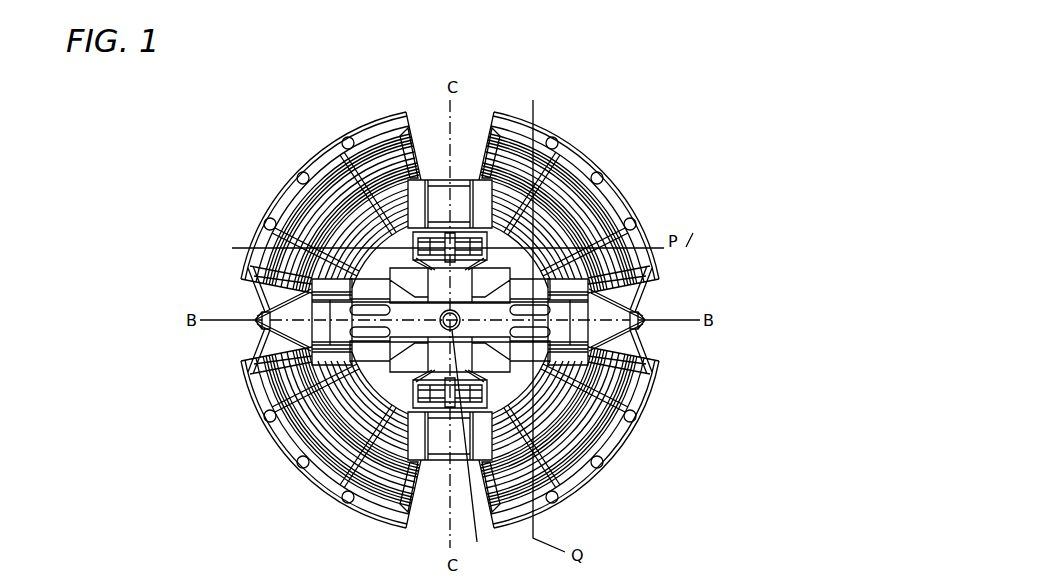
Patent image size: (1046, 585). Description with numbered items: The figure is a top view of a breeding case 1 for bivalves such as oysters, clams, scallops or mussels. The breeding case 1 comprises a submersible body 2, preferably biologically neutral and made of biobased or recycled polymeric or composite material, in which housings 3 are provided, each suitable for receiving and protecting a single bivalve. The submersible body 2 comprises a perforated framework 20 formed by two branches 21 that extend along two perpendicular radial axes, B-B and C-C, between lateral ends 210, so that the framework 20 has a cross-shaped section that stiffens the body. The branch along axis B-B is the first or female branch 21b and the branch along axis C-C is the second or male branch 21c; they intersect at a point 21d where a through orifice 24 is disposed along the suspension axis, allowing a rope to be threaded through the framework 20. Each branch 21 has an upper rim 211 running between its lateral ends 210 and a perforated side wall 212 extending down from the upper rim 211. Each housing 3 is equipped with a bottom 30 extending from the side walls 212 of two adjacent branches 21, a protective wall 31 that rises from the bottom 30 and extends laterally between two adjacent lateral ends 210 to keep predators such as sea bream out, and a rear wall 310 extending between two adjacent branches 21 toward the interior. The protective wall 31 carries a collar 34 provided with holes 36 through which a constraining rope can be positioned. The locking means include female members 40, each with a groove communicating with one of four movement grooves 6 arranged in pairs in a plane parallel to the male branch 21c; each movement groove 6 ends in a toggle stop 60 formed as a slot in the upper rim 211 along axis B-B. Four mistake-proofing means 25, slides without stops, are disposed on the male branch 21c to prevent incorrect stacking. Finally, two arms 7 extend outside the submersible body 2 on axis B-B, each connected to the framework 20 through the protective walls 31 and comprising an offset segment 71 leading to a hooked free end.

The breeding case 1 is at (659, 122).
The submersible body 2 is at (640, 387).
The housing 3 is at (292, 451).
The movement groove 6 is at (330, 379).
The arm 7 is at (257, 324).
The framework 20 is at (411, 121).
The branch 21 is at (456, 178).
The first branch 21b is at (592, 333).
The second branch 21c is at (442, 177).
The point 21d is at (486, 457).
The through orifice 24 is at (340, 193).
The mistake-proofing means 25 is at (417, 412).
The bottom 30 is at (593, 462).
The protective wall 31 is at (612, 190).
The collar 34 is at (565, 152).
The hole 36 is at (600, 178).
The female member 40 is at (323, 223).
The toggle stop 60 is at (285, 289).
The offset segment 71 is at (262, 343).
The lateral end 210 is at (270, 313).
The upper rim 211 is at (313, 414).
The side wall 212 is at (618, 408).
The rear wall 310 is at (370, 200).